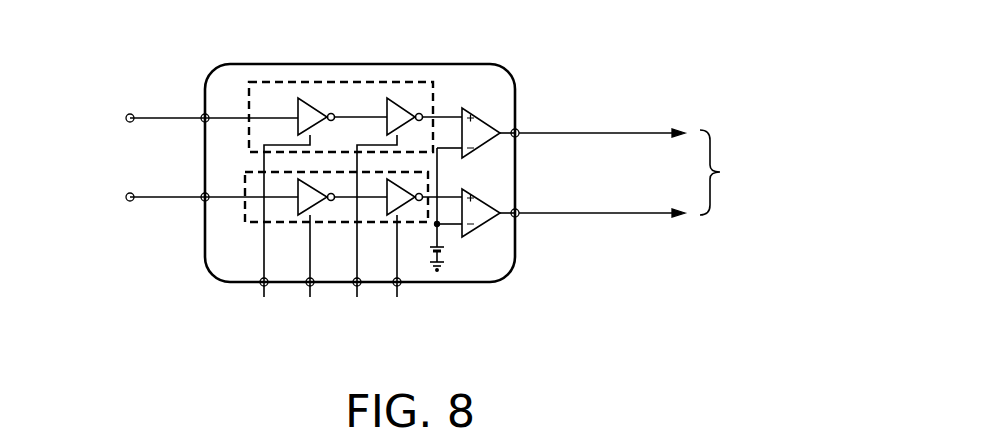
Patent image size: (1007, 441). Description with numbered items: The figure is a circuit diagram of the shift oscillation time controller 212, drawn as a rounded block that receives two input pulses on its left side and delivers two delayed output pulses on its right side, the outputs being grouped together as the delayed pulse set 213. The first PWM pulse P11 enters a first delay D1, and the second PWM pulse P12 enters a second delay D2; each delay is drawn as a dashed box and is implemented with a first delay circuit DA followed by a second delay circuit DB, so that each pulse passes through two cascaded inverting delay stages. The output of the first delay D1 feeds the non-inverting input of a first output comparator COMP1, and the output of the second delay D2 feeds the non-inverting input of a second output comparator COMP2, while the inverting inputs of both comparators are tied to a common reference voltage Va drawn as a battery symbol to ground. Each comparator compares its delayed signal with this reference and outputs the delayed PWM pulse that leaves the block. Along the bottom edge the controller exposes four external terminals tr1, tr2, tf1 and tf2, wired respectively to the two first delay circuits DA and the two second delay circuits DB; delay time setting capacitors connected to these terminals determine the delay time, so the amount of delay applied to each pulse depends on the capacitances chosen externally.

The shift oscillation time controller 212 is at (233, 64).
The output signals PT11/PT12 (or 313) 213 is at (690, 164).
The first delay D1 is at (348, 82).
The second delay D2 is at (245, 224).
The first delay circuit DA is at (318, 111).
The second delay circuit DB is at (401, 102).
The first output comparator COMP1 is at (486, 100).
The second output comparator COMP2 is at (486, 236).
The first PWM pulse P11 is at (162, 104).
The second PWM pulse P12 is at (162, 183).
The external terminal tr1 is at (283, 223).
The external terminal tr2 is at (311, 263).
The external terminal tf1 is at (373, 223).
The external terminal tf2 is at (398, 263).
The reference voltage source Va is at (430, 209).